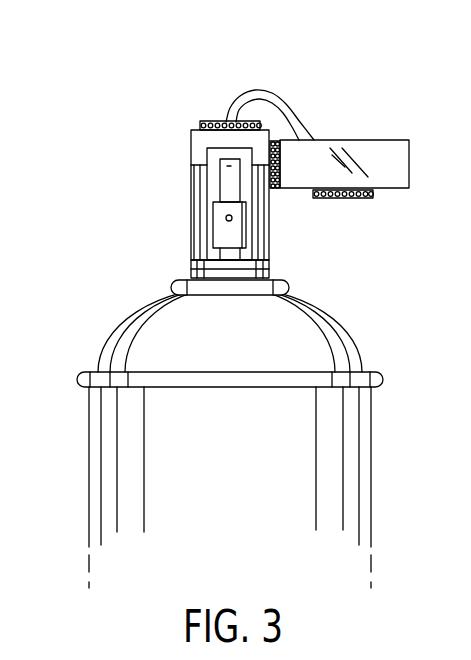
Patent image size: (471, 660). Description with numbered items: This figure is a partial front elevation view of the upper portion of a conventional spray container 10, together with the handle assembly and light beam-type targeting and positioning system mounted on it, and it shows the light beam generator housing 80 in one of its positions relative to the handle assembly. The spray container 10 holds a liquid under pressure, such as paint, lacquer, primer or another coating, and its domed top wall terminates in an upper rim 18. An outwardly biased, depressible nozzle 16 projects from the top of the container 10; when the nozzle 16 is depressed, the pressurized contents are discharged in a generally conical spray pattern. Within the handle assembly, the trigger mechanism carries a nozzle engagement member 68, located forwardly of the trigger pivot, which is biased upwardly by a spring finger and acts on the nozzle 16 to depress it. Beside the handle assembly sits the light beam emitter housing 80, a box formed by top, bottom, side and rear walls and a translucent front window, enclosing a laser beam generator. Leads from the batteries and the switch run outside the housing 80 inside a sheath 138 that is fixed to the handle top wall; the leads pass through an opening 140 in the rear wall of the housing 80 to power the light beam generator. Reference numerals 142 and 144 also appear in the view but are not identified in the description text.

The spray container 10 is at (78, 432).
The nozzle 16 is at (247, 231).
The upper rim 18 is at (290, 286).
The nozzle engagement member 68 is at (220, 184).
The housing 80 is at (388, 141).
The sheath 138 is at (258, 90).
The opening 140 is at (273, 140).
The connector pins 142 is at (249, 121).
The housing 144 is at (272, 201).